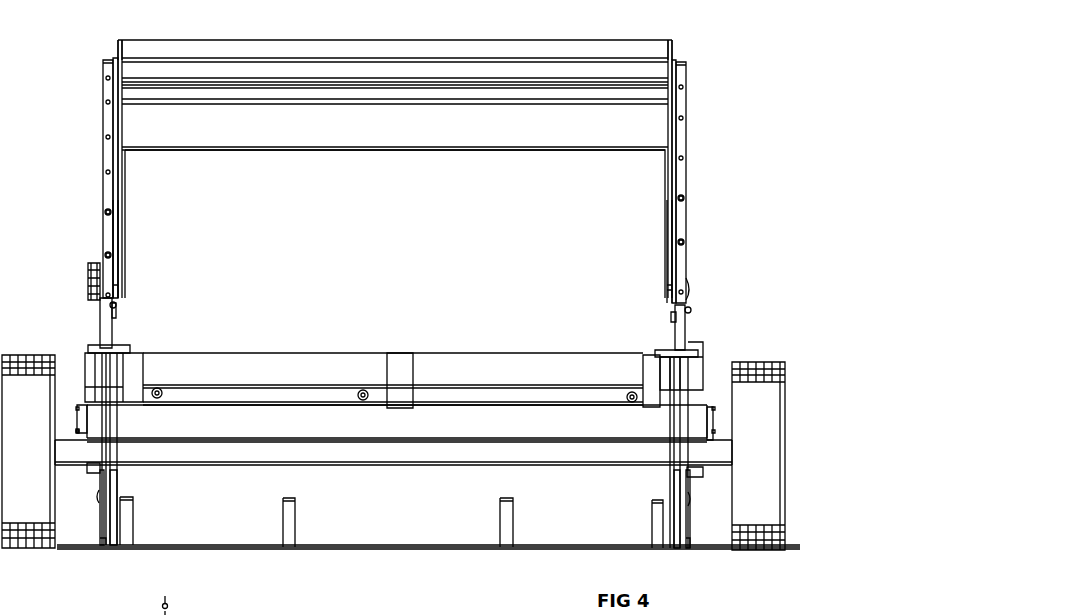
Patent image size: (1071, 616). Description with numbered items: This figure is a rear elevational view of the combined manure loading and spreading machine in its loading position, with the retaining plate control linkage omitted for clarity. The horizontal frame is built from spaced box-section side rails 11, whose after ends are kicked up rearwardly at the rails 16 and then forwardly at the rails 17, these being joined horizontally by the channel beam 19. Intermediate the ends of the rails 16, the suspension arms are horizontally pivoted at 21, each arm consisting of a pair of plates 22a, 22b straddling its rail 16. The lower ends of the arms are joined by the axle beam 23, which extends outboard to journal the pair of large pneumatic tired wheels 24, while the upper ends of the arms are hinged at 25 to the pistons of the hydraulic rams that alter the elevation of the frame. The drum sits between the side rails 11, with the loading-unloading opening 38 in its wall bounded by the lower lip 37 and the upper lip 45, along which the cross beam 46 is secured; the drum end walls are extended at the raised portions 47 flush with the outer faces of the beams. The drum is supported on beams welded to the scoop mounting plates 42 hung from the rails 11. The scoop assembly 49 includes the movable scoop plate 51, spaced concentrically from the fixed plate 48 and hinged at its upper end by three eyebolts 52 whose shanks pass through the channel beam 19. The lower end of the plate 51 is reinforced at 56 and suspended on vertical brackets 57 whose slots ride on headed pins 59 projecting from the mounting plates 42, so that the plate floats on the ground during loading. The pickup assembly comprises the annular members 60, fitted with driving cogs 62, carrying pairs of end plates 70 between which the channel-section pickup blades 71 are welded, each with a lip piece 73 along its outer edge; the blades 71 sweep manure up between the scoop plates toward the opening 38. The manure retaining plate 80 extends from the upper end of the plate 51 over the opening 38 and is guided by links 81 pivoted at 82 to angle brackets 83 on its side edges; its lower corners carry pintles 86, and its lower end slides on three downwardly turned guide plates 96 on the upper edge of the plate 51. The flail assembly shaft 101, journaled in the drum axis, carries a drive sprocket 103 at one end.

The side rail 11 is at (88, 466).
The kicked-up rail 16 is at (95, 435).
The forwardly kicked rail 17 is at (700, 365).
The channel beam 19 is at (457, 400).
The pivot 21 is at (77, 432).
The suspension arm plate 22a is at (77, 420).
The suspension arm plate 22b is at (112, 422).
The axle beam 23 is at (410, 462).
The pneumatic tired wheel 24 is at (15, 549).
The hinge 25 is at (77, 408).
The lower lip 37 is at (119, 272).
The loading-unloading opening 38 is at (477, 145).
The scoop mounting plate 42 is at (118, 474).
The upper lip 45 is at (385, 101).
The cross beam 46 is at (316, 96).
The raised portion 47 is at (119, 118).
The fixed plate 48 is at (119, 291).
The scoop assembly 49 is at (362, 509).
The movable scoop plate 51 is at (295, 366).
The eyebolt 52 is at (160, 389).
The reinforcing structure 56 is at (290, 520).
The vertical bracket 57 is at (100, 540).
The headed pin 59 is at (97, 495).
The annular member 60 is at (102, 158).
The driving cog 62 is at (106, 253).
The pickup blade end plate 70 is at (117, 46).
The pickup blade 71 is at (540, 72).
The lip piece 73 is at (330, 42).
The manure retaining plate 80 is at (410, 252).
The link 81 is at (100, 326).
The pivot 82 is at (117, 305).
The angle bracket 83 is at (116, 314).
The pintle 86 is at (130, 350).
The guide plate 96 is at (139, 383).
The shaft 101 is at (689, 292).
The drive sprocket 103 is at (88, 268).